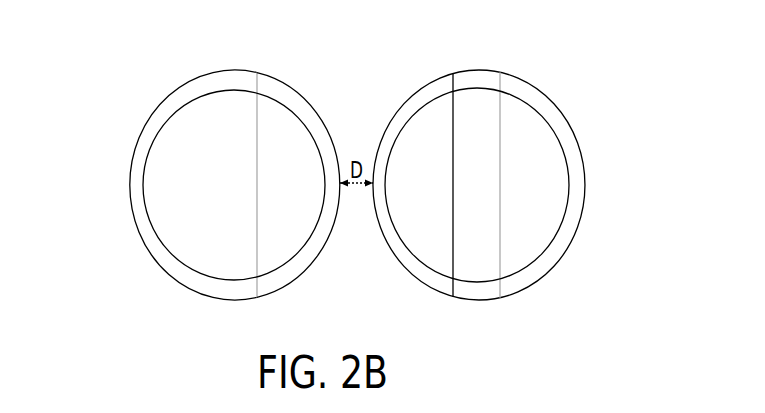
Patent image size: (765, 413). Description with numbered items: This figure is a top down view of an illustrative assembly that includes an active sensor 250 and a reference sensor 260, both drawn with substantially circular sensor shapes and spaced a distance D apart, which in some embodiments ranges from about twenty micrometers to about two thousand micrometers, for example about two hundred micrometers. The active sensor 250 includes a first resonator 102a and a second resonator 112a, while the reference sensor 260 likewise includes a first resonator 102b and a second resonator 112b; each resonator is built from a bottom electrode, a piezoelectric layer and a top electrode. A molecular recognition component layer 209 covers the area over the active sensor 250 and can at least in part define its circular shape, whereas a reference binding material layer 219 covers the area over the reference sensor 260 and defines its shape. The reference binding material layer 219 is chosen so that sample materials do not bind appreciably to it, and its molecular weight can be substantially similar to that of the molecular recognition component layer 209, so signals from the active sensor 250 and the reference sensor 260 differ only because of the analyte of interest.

The active sensor 250 is at (86, 61).
The reference sensor 260 is at (599, 61).
The molecular recognition component layer 209 is at (238, 89).
The reference binding material layer 219 is at (482, 90).
The first resonator 102a is at (200, 191).
The second resonator 112a is at (313, 187).
The first resonator 102b is at (447, 191).
The second resonator 112b is at (557, 187).